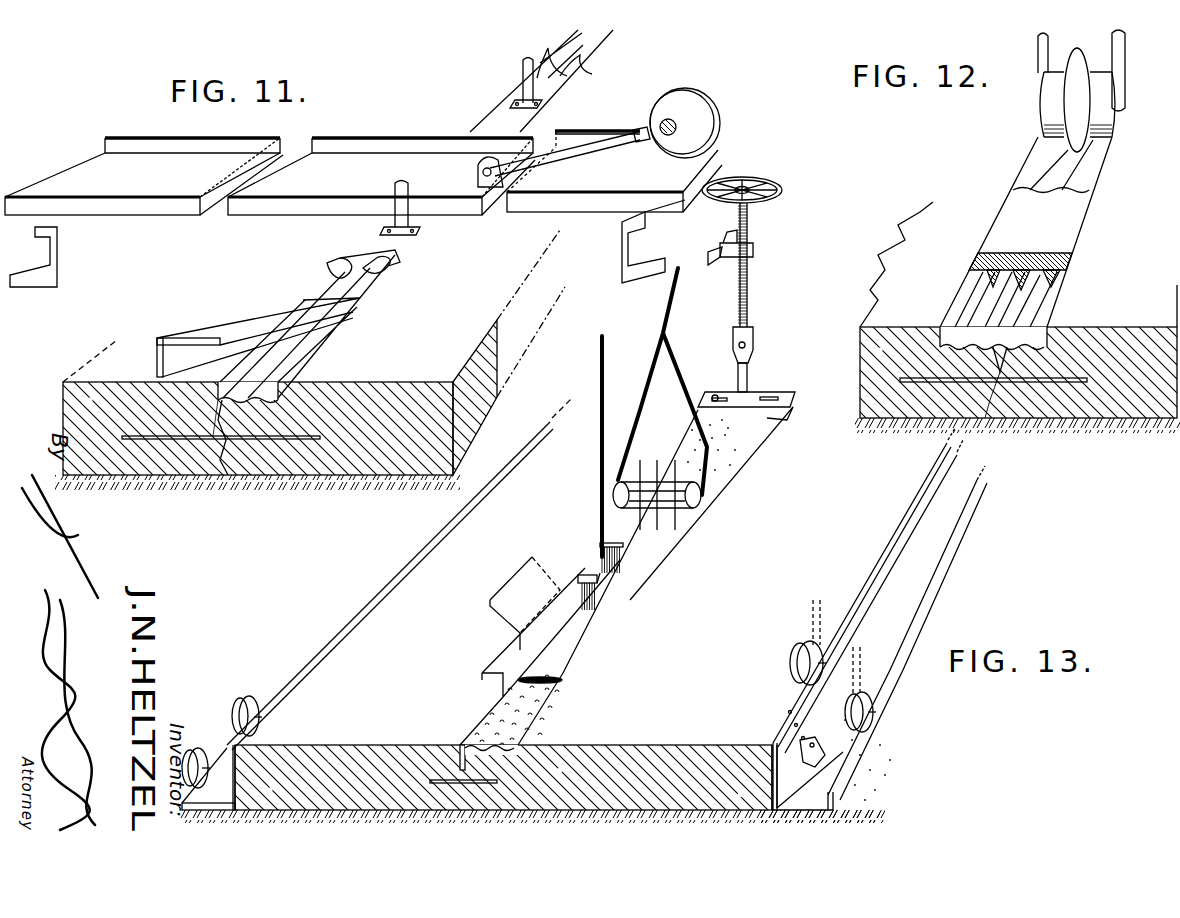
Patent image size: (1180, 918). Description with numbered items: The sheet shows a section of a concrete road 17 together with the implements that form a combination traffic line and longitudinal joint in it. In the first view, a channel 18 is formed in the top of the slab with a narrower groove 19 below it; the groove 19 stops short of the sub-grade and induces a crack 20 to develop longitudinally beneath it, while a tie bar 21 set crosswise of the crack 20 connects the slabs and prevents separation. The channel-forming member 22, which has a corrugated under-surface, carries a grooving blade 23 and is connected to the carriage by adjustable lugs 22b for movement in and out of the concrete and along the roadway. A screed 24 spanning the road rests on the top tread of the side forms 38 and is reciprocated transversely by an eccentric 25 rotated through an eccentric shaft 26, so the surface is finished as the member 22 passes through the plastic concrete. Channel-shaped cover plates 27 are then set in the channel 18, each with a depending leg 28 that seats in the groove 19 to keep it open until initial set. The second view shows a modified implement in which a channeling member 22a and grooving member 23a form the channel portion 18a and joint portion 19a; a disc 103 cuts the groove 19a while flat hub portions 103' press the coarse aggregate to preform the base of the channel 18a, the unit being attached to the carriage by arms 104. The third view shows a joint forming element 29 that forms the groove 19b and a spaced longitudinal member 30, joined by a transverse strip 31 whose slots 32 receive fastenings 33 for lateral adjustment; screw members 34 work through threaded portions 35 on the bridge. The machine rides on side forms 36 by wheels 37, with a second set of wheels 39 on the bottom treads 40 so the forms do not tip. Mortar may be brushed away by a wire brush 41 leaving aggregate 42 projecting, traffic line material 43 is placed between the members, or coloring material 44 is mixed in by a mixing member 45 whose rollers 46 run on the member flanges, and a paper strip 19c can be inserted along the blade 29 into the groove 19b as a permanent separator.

In FIG. 11, the concrete road 17 is at (400, 460).
In FIG. 12, the concrete road 17 is at (1017, 317).
In FIG. 11, the channel 18 is at (283, 370).
In FIG. 12, the channel portion 18a is at (973, 305).
In FIG. 11, the groove 19 is at (213, 436).
In FIG. 12, the joint portion 19a is at (973, 385).
In FIG. 11, the groove 19b is at (475, 732).
In FIG. 11, the paper strip 19c is at (505, 593).
In FIG. 11, the crack 20 is at (226, 478).
In FIG. 11, the tie bar 21 is at (150, 440).
In FIG. 12, the tie bar 21 is at (1047, 382).
In FIG. 11, the channel-forming member 22 is at (407, 242).
In FIG. 12, the channeling member 22a is at (1072, 218).
In FIG. 11, the lugs 22b is at (522, 67).
In FIG. 11, the grooving blade 23 is at (344, 261).
In FIG. 12, the grooving member 23a is at (1027, 277).
In FIG. 11, the screed 24 is at (257, 171).
In FIG. 11, the eccentric 25 is at (683, 105).
In FIG. 11, the eccentric shaft 26 is at (662, 137).
In FIG. 11, the cover plates 27 is at (263, 318).
In FIG. 11, the depending leg 28 is at (157, 365).
In FIG. 11, the joint forming element 29 is at (508, 650).
In FIG. 11, the longitudinal member 30 is at (633, 585).
In FIG. 11, the transverse strip 31 is at (758, 397).
In FIG. 11, the slots 32 is at (790, 403).
In FIG. 11, the fastenings 33 is at (715, 395).
In FIG. 11, the screw members 34 is at (748, 298).
In FIG. 11, the threaded portions 35 is at (753, 247).
In FIG. 13, the side forms 36 is at (905, 592).
In FIG. 11, the wheels 37 is at (238, 697).
In FIG. 13, the wheels 37 is at (795, 660).
In FIG. 11, the top tread 38 is at (85, 257).
In FIG. 13, the top tread 38 is at (915, 515).
In FIG. 11, the second set of wheels 39 is at (197, 748).
In FIG. 13, the second set of wheels 39 is at (870, 730).
In FIG. 13, the bottom treads 40 is at (892, 678).
In FIG. 11, the wire brush 41 is at (590, 562).
In FIG. 11, the projecting aggregate 42 is at (530, 725).
In FIG. 11, the traffic line material 43 is at (547, 673).
In FIG. 11, the coloring material 44 is at (728, 445).
In FIG. 11, the mixing member 45 is at (682, 513).
In FIG. 11, the rollers 46 is at (613, 485).
In FIG. 12, the disc 103 is at (1040, 92).
In FIG. 12, the flat hub portions 103' is at (1077, 105).
In FIG. 12, the arms 104 is at (1118, 53).